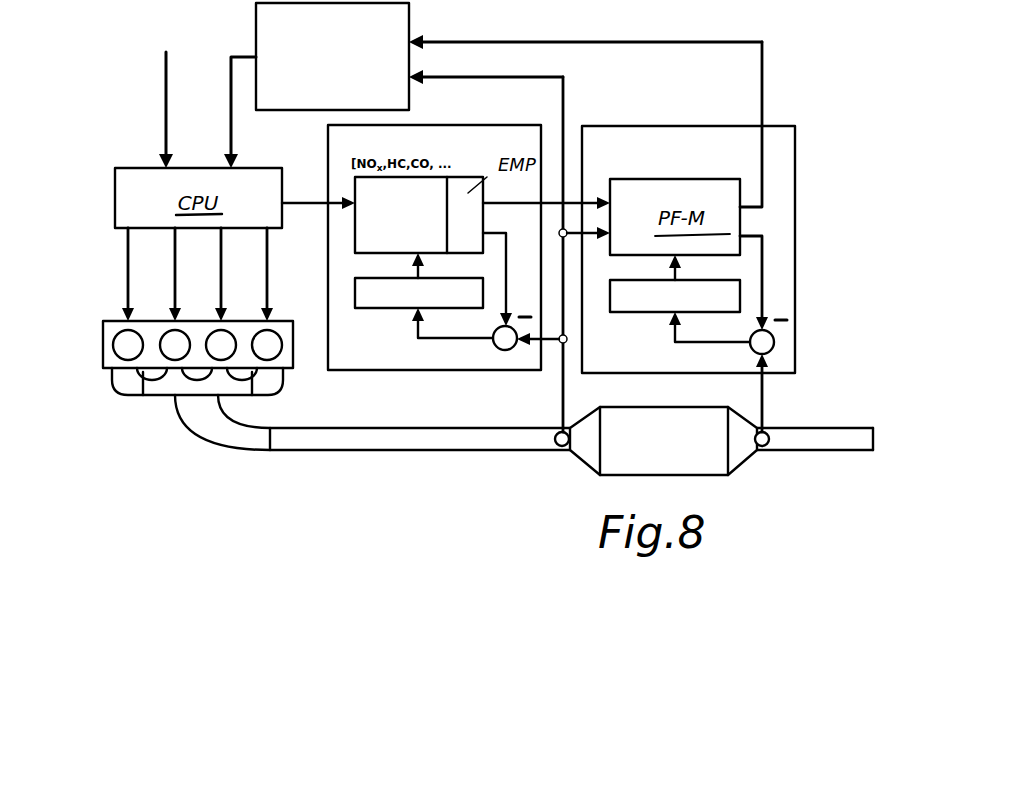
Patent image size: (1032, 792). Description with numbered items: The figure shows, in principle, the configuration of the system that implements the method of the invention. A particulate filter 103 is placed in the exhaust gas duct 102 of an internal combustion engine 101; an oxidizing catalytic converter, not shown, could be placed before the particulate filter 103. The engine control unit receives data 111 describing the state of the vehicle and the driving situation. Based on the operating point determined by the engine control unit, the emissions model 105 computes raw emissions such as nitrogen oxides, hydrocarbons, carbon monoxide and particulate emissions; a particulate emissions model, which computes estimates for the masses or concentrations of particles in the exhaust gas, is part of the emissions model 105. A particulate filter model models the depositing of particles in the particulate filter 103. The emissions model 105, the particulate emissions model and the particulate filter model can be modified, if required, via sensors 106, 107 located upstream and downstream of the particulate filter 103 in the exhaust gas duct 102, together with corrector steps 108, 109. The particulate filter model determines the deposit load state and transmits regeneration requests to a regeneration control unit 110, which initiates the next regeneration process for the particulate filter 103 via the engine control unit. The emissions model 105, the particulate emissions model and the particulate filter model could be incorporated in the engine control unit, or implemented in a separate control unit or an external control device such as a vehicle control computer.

The internal combustion engine 101 is at (103, 345).
The exhaust gas duct 102 is at (311, 440).
The particulate filter 103 is at (678, 455).
The emissions model 105 is at (437, 226).
The sensor 106 is at (560, 449).
The sensor 107 is at (763, 449).
The corrector step 108 is at (428, 304).
The corrector step 109 is at (691, 306).
The regeneration control unit 110 is at (352, 73).
The data describing the state of the vehicle and the driving situation 111 is at (163, 86).